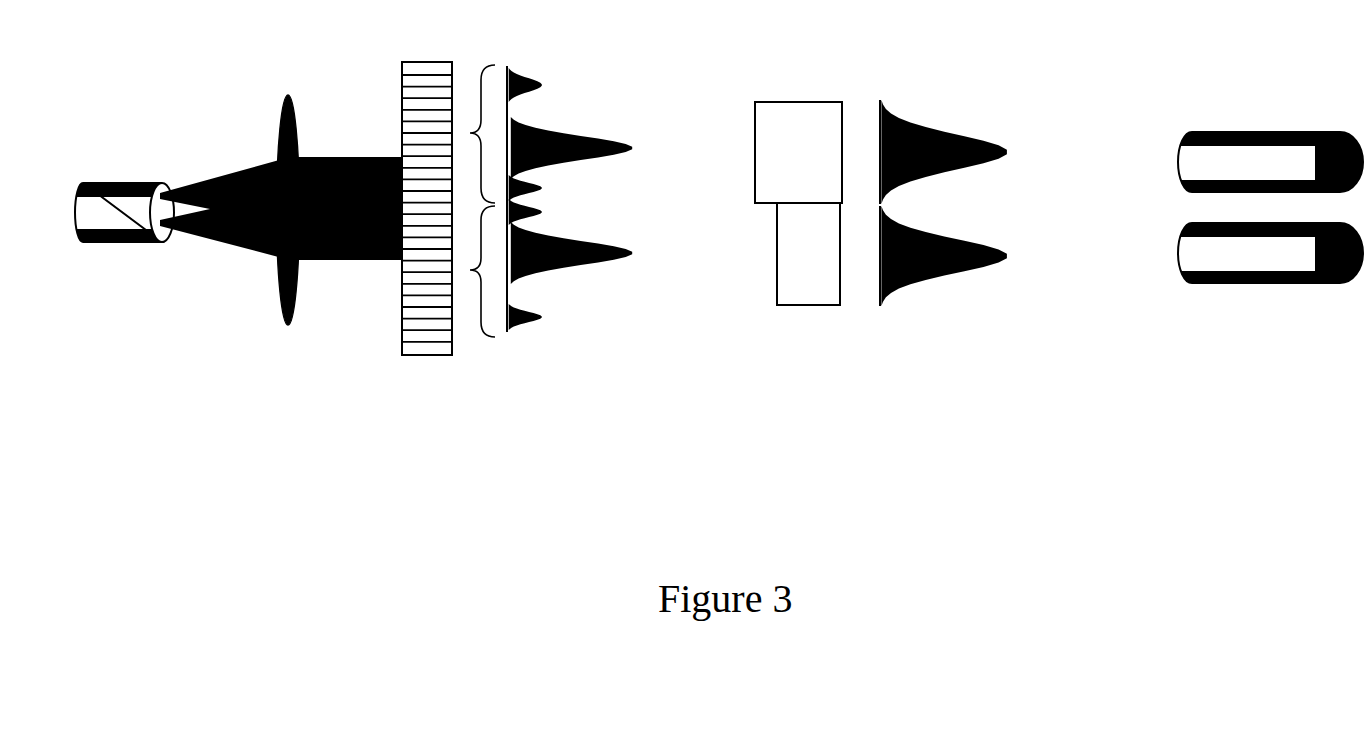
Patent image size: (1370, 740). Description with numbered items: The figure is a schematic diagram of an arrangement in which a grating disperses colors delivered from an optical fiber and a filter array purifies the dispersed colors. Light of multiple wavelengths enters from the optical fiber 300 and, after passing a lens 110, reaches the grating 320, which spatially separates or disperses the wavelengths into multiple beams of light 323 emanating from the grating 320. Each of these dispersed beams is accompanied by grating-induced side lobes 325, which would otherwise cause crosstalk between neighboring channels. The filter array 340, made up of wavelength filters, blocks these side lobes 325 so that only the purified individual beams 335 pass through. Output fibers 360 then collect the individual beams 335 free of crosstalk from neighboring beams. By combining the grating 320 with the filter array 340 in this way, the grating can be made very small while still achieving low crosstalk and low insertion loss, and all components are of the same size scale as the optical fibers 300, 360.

The lens 110 is at (290, 192).
The optical fiber 300 is at (122, 232).
The grating 320 is at (426, 227).
The multiple beams of light 323 is at (496, 364).
The side lobes 325 is at (543, 86).
The individual beams 335 is at (955, 125).
The filter array 340 is at (798, 222).
The output fibers 360 is at (1193, 290).